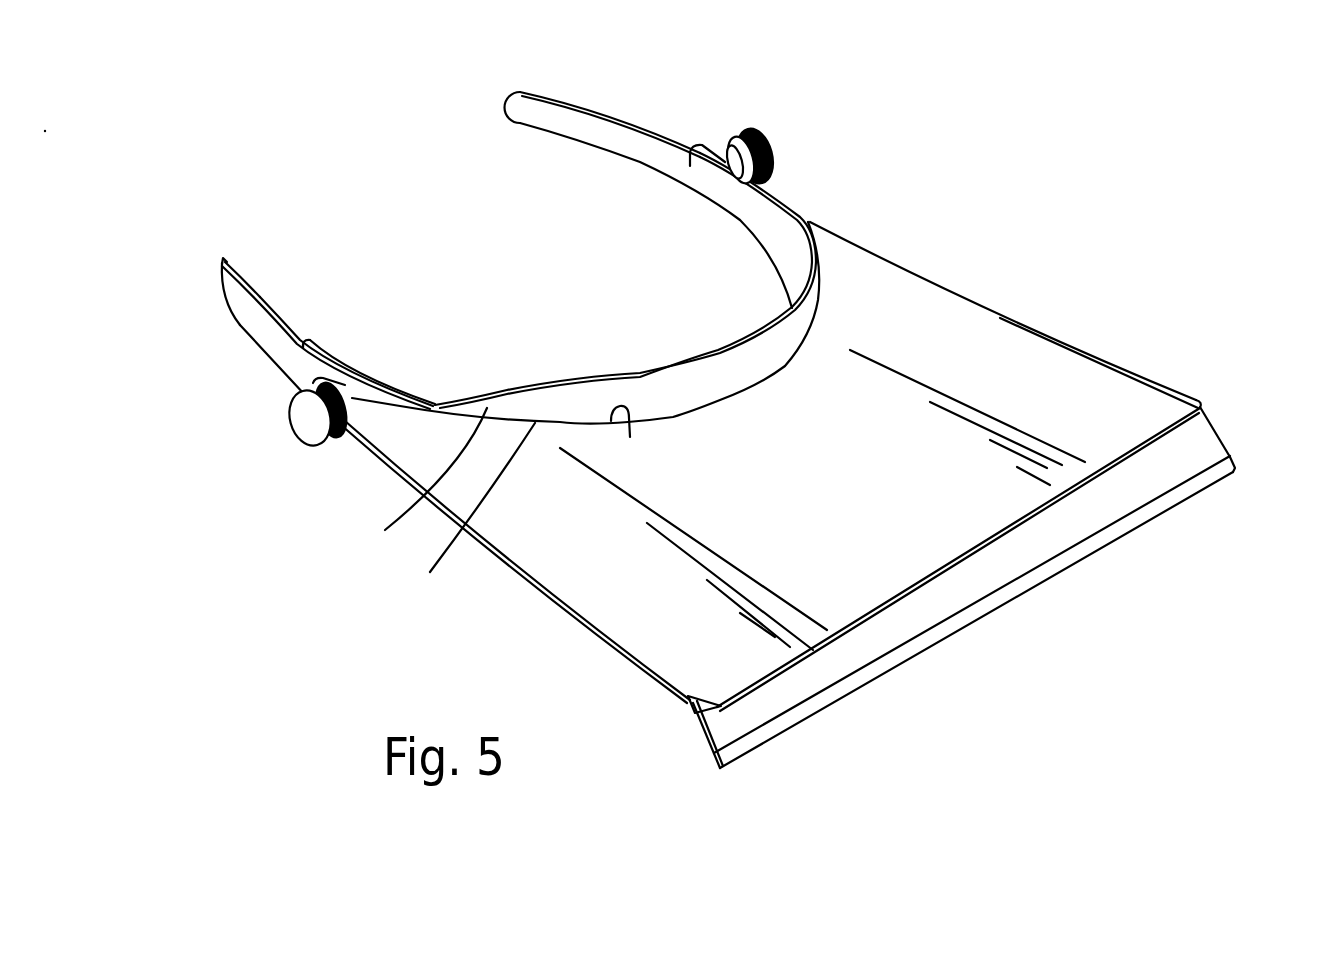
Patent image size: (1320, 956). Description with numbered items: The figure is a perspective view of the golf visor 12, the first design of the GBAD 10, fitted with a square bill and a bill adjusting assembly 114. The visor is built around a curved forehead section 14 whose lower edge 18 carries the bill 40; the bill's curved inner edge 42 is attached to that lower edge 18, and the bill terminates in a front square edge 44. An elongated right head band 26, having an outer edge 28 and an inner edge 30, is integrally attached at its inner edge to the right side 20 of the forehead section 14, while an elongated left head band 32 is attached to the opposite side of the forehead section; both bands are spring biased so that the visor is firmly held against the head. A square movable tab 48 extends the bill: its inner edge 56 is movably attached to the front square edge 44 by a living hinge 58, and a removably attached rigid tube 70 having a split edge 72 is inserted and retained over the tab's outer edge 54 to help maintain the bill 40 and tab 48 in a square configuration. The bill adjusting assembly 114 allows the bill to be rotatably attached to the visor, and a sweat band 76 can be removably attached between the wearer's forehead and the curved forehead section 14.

The GBAD 10 is at (744, 429).
The golf visor 12 is at (771, 434).
The curved forehead section 14 is at (771, 434).
The lower edge 18 is at (465, 515).
The right side 20 is at (419, 487).
The elongated right head band 26 is at (306, 311).
The outer edge 28 is at (226, 259).
The inner edge 30 is at (393, 408).
The elongated left head band 32 is at (611, 172).
The bill 40 is at (997, 355).
The curved inner edge 42 is at (630, 437).
The front square edge 44 is at (947, 566).
The square movable tab 48 is at (1226, 428).
The outer edge 54 is at (500, 113).
The inner edge 56 is at (693, 702).
The living hinge 58 is at (1160, 427).
The rigid tube 70 is at (870, 677).
The split edge 72 is at (716, 771).
The sweat band 76 is at (762, 230).
The bill adjusting assembly 114 is at (317, 426).